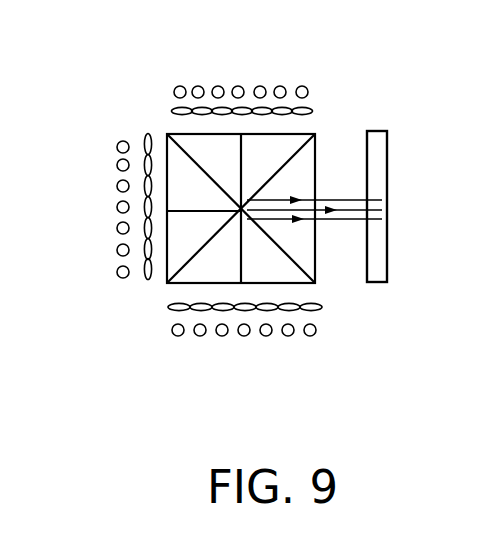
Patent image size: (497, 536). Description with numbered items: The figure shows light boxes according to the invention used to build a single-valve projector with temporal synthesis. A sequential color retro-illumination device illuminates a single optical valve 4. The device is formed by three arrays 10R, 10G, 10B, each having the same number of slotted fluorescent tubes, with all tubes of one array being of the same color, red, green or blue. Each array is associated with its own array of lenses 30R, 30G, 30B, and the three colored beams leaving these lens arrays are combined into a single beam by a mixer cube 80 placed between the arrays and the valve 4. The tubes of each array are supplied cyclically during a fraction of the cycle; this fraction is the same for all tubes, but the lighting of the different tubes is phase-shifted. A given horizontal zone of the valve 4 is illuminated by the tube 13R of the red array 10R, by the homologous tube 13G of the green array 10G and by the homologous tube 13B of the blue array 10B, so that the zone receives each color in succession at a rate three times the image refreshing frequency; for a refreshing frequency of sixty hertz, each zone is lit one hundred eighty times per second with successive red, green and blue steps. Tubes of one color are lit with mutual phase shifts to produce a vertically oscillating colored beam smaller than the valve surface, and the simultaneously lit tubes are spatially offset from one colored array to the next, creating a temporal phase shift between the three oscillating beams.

The optical valve 4 is at (377, 135).
The mixer cube 80 is at (186, 266).
The red array 10R is at (303, 77).
The red tube 13R is at (224, 87).
The array of lenses 30R is at (238, 110).
The green array 10G is at (108, 207).
The green tube 13G is at (121, 189).
The array of lenses 30G is at (145, 165).
The blue array 10B is at (317, 338).
The blue tube 13B is at (220, 336).
The array of lenses 30B is at (252, 310).